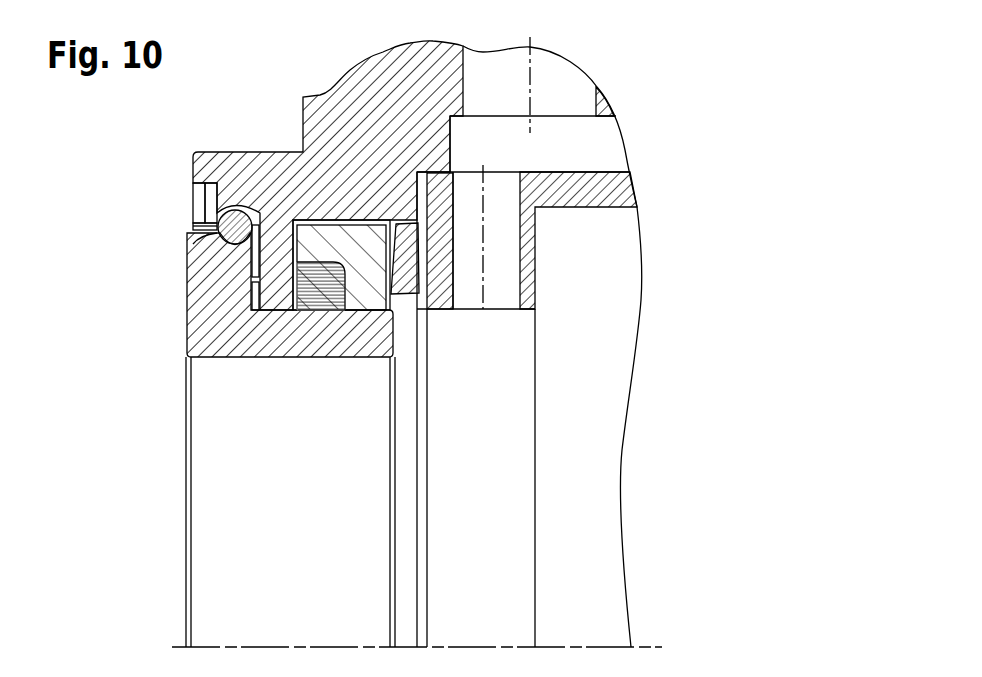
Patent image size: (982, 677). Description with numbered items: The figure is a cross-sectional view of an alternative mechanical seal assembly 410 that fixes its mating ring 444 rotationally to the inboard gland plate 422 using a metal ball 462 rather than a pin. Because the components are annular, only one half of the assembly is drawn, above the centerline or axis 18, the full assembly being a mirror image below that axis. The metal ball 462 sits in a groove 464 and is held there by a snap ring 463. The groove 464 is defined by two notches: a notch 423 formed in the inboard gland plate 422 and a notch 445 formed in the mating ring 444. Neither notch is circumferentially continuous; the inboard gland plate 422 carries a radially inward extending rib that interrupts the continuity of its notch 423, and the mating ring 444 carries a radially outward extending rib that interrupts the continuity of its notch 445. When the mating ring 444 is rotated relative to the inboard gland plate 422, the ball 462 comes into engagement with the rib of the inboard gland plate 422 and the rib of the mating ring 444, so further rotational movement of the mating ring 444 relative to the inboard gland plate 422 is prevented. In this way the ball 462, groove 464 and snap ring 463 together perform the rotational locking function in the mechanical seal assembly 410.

The mechanical seal assembly 410 is at (577, 50).
The inboard gland plate 422 is at (325, 92).
The notch 423 is at (262, 222).
The metal ball 462 is at (229, 213).
The snap ring 463 is at (193, 200).
The groove 464 is at (192, 223).
The mating ring 444 is at (217, 358).
The notch 445 is at (205, 243).
The axis 18 is at (645, 647).